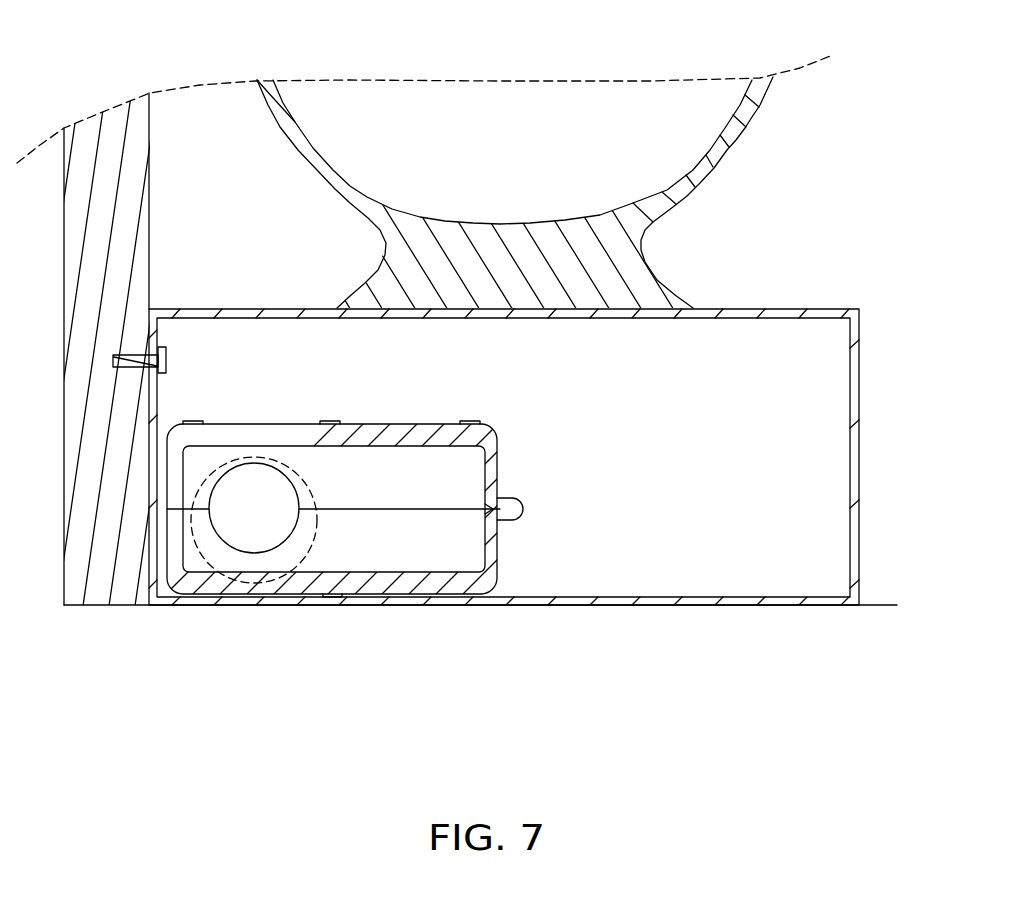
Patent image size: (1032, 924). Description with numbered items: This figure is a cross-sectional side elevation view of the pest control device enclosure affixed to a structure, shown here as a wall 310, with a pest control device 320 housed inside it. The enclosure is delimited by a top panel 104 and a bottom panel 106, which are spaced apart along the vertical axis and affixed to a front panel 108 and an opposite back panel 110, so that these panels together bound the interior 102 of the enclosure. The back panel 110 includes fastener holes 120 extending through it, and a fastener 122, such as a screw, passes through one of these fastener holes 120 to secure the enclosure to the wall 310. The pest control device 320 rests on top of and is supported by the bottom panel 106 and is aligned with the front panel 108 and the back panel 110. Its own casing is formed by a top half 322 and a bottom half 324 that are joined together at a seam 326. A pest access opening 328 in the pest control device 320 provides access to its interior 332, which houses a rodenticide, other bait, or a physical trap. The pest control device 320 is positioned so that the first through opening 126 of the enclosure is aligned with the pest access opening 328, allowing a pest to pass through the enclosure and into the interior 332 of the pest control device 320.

The wall 310 is at (62, 172).
The interior 102 is at (500, 457).
The top panel 104 is at (822, 309).
The bottom panel 106 is at (693, 603).
The front panel 108 is at (860, 398).
The back panel 110 is at (158, 398).
The fastener holes 120 is at (157, 378).
The fasteners 122 is at (166, 355).
The first through opening 126 is at (303, 482).
The pest control device 320 is at (425, 502).
The top half 322 is at (497, 460).
The bottom half 324 is at (497, 543).
The seam 326 is at (517, 503).
The pest access opening 328 is at (288, 540).
The interior 332 is at (404, 541).